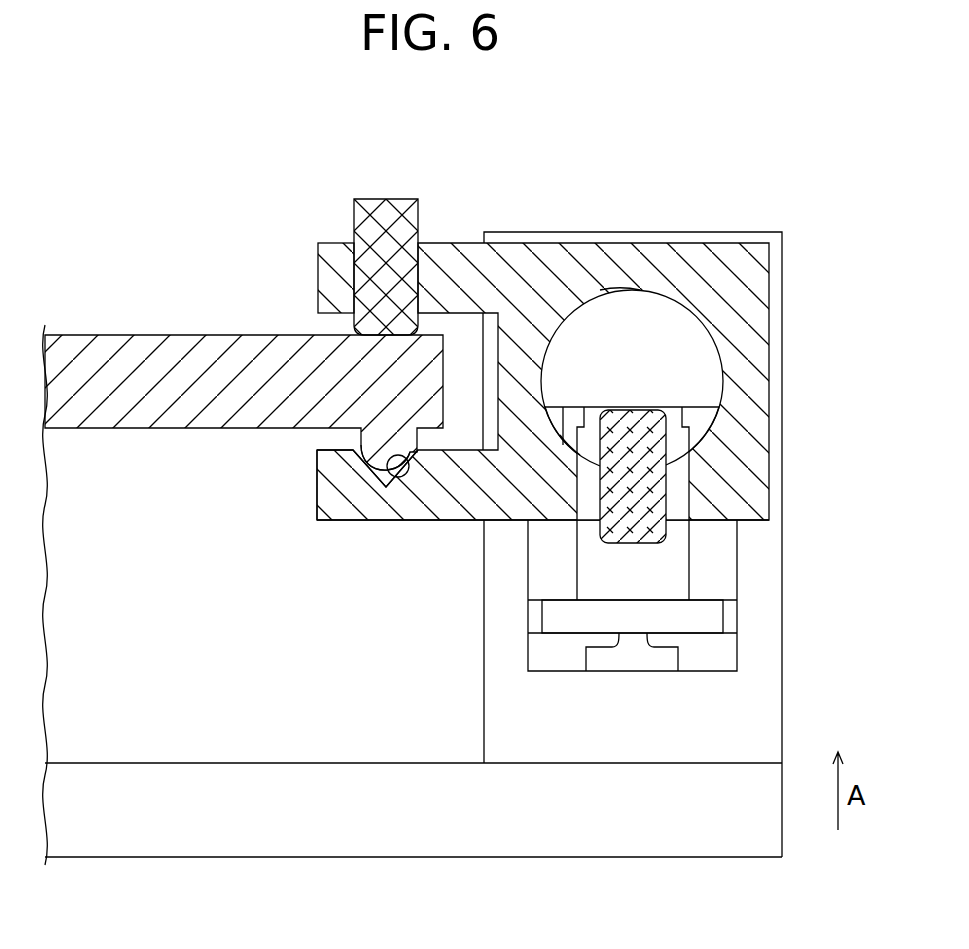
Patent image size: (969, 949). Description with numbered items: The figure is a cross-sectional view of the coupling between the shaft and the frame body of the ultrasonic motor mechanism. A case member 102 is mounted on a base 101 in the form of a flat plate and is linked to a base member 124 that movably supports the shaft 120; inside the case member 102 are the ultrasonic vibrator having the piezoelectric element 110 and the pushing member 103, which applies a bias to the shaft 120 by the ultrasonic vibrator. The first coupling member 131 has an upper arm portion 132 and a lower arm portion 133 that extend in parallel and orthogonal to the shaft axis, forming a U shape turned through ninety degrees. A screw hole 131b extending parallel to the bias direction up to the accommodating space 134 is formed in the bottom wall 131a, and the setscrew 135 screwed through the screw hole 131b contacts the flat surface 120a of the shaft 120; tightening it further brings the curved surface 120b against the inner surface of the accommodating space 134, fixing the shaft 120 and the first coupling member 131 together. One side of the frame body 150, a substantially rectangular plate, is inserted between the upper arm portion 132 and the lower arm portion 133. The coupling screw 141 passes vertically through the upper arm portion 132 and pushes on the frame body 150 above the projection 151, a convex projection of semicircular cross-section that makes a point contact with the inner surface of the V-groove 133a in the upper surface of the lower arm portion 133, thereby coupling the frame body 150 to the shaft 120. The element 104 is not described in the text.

The base 101 is at (305, 837).
The case member 102 is at (571, 743).
The pushing member 103 is at (704, 618).
The terminal 104 is at (653, 660).
The piezoelectric element 110 is at (662, 565).
The shaft 120 is at (630, 313).
The flat surface 120a is at (568, 447).
The curved surface 120b is at (590, 290).
The base member 124 is at (740, 240).
The first coupling member 131 is at (750, 281).
The bottom wall 131a is at (677, 490).
The screw hole 131b is at (660, 532).
The upper arm portion 132 is at (333, 255).
The lower arm portion 133 is at (333, 503).
The V-groove 133a is at (400, 463).
The accommodating space 134 is at (702, 328).
The setscrew 135 is at (673, 417).
The coupling screw 141 is at (387, 205).
The frame body 150 is at (137, 346).
The projection 151 is at (383, 447).